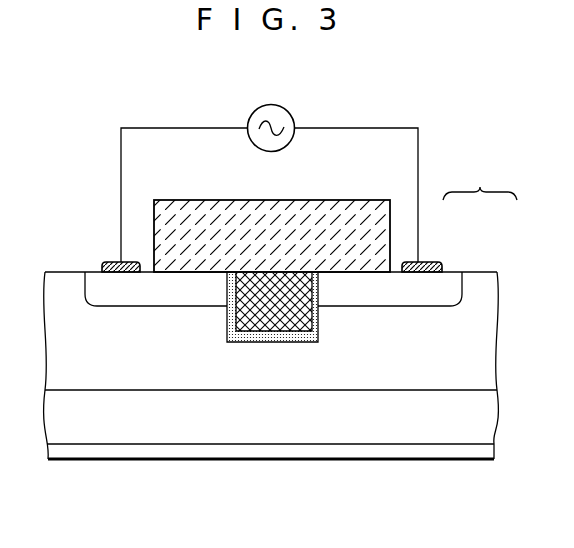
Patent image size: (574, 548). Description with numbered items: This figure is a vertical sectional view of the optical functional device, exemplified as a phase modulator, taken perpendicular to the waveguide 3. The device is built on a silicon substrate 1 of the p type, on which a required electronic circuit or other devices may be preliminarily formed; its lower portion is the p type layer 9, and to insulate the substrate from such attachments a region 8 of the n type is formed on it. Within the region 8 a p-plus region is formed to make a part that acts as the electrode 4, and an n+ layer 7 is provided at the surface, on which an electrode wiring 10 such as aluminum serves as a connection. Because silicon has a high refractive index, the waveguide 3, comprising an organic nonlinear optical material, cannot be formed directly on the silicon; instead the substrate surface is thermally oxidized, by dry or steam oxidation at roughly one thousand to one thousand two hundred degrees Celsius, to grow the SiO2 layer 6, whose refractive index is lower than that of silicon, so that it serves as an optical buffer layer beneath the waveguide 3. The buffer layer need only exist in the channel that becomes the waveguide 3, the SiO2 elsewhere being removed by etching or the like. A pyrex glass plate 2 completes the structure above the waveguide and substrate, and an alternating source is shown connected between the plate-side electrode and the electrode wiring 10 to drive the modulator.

The silicon substrate 1 is at (97, 466).
The pyrex glass plate 2 is at (336, 215).
The waveguide 3 is at (250, 313).
The electrode 4 is at (488, 181).
The SiO2 layer 6 is at (283, 338).
The n+ layer 7 is at (447, 280).
The n type region 8 is at (362, 357).
The p type layer 9 is at (320, 410).
The electrode wiring 10 is at (432, 263).